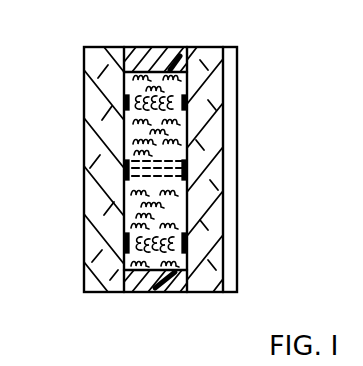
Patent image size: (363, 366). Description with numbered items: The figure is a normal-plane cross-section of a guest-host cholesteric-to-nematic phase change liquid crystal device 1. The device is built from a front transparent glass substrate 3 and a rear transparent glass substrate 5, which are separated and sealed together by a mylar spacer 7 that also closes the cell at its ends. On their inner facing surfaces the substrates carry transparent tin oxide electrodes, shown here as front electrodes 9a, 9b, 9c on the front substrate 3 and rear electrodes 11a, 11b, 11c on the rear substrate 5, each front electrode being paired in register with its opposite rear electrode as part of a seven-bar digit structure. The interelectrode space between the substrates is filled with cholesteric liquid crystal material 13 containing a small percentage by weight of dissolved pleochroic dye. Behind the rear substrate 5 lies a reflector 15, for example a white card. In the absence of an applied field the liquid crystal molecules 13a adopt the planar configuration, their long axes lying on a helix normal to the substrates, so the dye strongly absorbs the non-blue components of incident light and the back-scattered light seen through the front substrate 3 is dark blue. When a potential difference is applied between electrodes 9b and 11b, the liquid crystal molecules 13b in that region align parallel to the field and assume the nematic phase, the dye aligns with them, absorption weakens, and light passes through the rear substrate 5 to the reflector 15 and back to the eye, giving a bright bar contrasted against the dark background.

The electrochemical cell 1 is at (181, 47).
The front transparent glass substrate 3 is at (122, 248).
The rear transparent glass substrate 5 is at (197, 287).
The mylar spacer 7 is at (150, 47).
The transparent tin oxide electrode 9a is at (125, 100).
The transparent tin oxide electrode 9b is at (125, 163).
The transparent tin oxide electrode 9c is at (125, 245).
The transparent tin oxide electrode 11a is at (187, 97).
The transparent tin oxide electrode 11b is at (188, 163).
The transparent tin oxide electrode 11c is at (188, 235).
The cholesteric liquid crystal material 13 is at (143, 253).
The liquid crystal molecules 13a is at (226, 49).
The liquid crystal molecules 13b is at (137, 148).
The reflector 15 is at (229, 243).